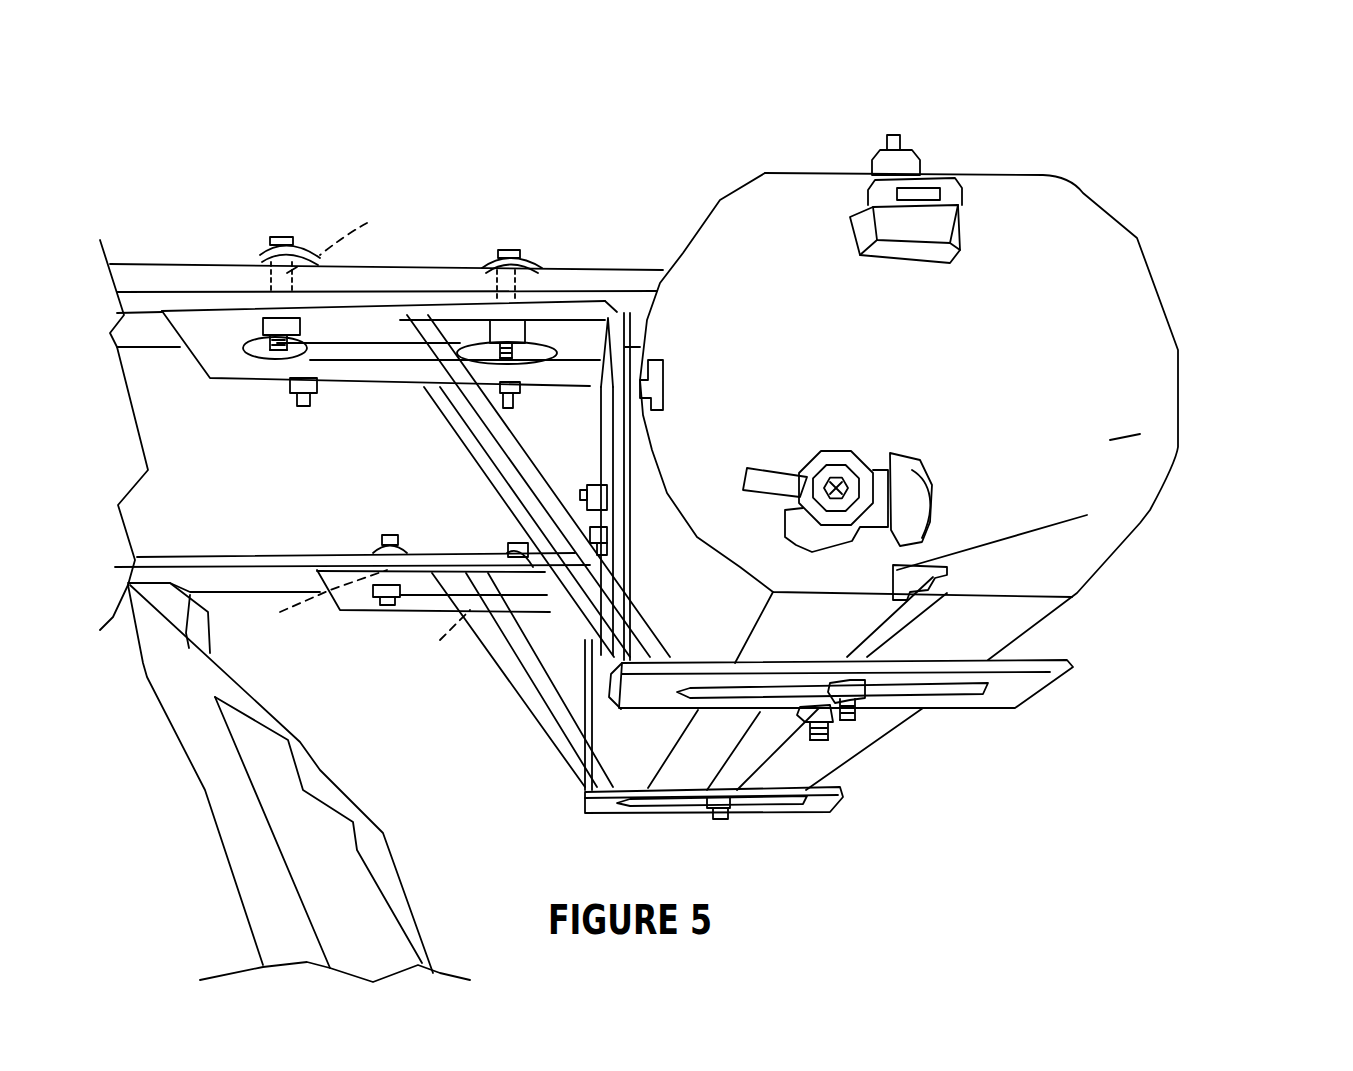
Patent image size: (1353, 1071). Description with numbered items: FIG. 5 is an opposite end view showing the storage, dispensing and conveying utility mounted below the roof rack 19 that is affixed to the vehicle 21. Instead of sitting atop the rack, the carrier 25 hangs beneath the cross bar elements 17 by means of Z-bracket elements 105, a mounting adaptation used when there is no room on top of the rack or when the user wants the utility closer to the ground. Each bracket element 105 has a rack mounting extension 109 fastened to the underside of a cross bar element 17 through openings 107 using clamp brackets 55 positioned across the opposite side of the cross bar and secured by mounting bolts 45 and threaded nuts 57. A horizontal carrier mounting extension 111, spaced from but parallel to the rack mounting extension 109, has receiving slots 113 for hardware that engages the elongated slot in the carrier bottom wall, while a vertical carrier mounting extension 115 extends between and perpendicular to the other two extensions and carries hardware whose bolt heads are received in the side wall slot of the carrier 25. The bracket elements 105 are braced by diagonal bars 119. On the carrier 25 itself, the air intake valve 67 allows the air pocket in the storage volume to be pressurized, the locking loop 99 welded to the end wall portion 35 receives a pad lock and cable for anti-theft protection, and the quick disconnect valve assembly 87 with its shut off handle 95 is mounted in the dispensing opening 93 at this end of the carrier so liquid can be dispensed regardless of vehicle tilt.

The elements 17 is at (381, 526).
The roof rack 19 is at (200, 632).
The vehicle 21 is at (273, 789).
The carrier 25 is at (1037, 380).
The end wall portion 35 is at (1140, 434).
The mounting bolts 45 is at (923, 758).
The clamp brackets 55 is at (373, 550).
The threaded nuts 57 is at (497, 333).
The air intake valve 67 is at (910, 152).
The quick disconnect valve assembly 87 is at (900, 480).
The carrier opening 93 is at (857, 543).
The shut off handle 95 is at (775, 477).
The locking loop 99 is at (920, 223).
The Z-bracket 105 is at (200, 353).
The openings 107 is at (344, 428).
The rack mounting extensions 109 is at (362, 304).
The horizontal carrier mounting extensions 111 is at (1003, 679).
The receiving slots 113 is at (763, 693).
The vertical carrier mounting extensions 115 is at (625, 517).
The diagonal bars 119 is at (480, 405).